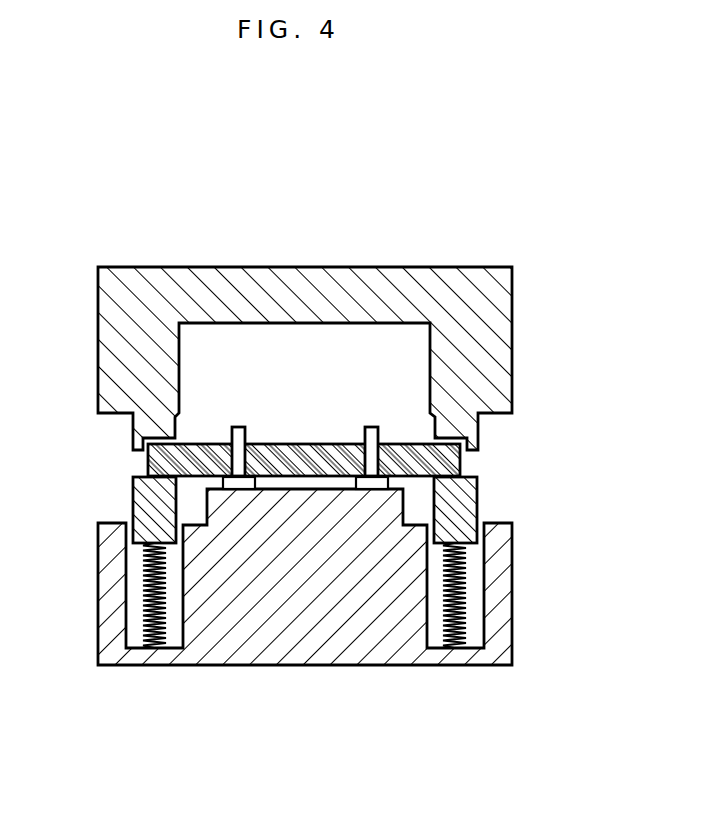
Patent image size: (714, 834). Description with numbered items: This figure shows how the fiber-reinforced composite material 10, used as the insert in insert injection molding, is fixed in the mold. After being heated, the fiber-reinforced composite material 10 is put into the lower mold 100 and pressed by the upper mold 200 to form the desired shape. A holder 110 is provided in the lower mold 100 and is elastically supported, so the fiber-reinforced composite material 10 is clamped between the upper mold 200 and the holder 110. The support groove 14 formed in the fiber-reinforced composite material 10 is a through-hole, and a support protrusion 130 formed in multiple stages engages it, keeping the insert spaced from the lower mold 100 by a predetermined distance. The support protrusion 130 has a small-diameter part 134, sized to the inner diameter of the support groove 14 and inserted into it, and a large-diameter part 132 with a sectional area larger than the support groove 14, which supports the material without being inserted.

The upper mold 200 is at (498, 325).
The lower mold 100 is at (498, 588).
The holder 110 is at (460, 502).
The fiber-reinforced composite material 10 is at (450, 467).
The support groove 14 is at (231, 463).
The support protrusion 130 is at (302, 614).
The large-diameter part 132 is at (238, 483).
The small-diameter part 134 is at (240, 433).